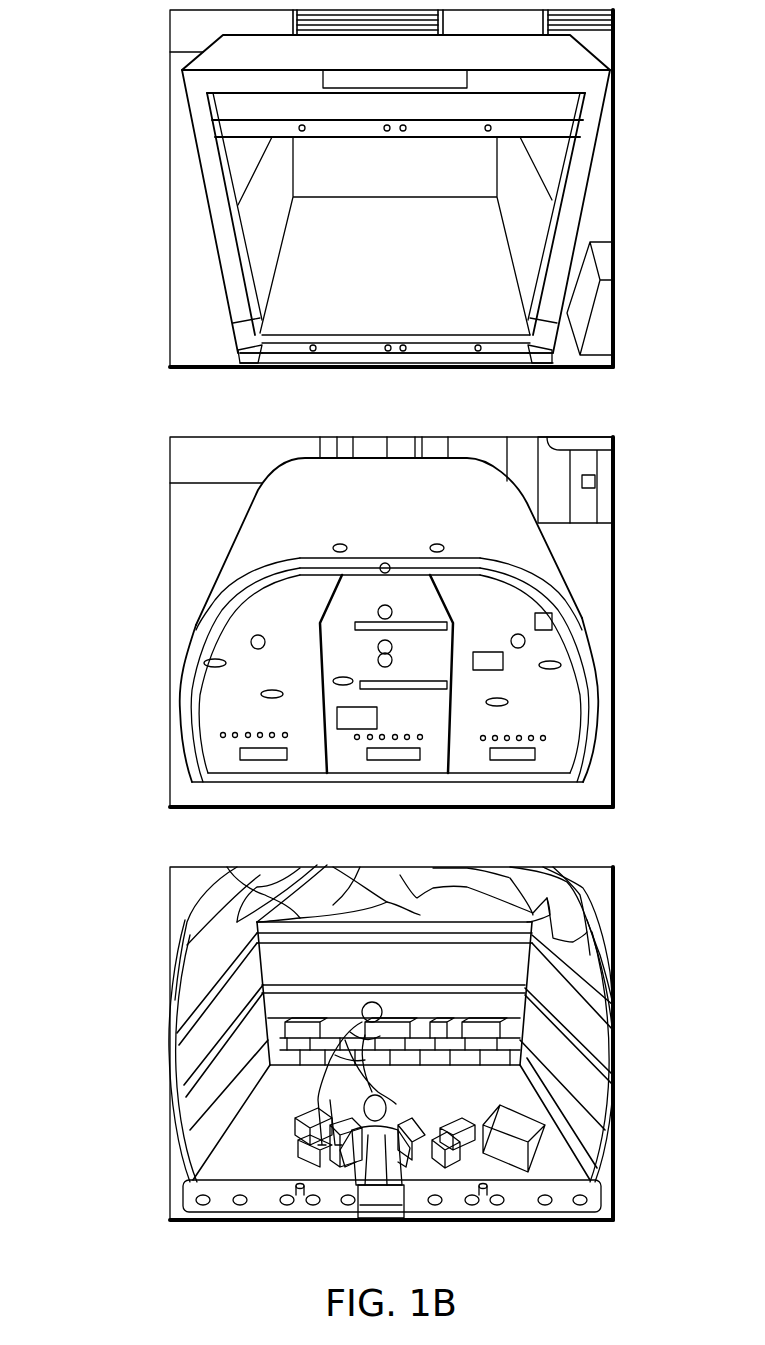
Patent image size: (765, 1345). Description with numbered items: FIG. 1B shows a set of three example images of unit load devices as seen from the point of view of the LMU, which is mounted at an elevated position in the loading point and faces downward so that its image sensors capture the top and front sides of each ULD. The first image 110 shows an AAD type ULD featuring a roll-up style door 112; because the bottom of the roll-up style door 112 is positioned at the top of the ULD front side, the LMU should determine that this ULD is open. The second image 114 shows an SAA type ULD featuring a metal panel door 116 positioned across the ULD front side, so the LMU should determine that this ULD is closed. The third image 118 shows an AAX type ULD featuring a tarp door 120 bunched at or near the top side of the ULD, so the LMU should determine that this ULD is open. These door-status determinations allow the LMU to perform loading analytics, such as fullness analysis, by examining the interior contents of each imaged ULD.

The first image 110 is at (137, 43).
The roll-up style door 112 is at (567, 128).
The second image 114 is at (137, 456).
The metal panel door 116 is at (567, 648).
The third image 118 is at (137, 901).
The tarp door 120 is at (567, 920).